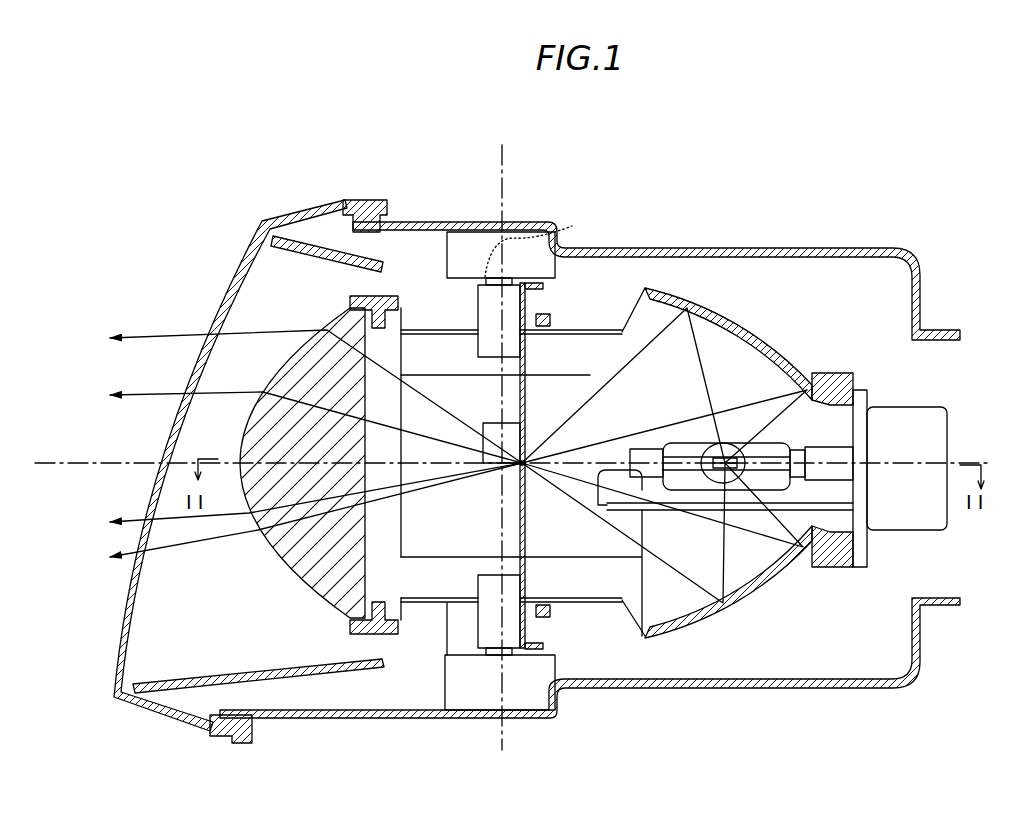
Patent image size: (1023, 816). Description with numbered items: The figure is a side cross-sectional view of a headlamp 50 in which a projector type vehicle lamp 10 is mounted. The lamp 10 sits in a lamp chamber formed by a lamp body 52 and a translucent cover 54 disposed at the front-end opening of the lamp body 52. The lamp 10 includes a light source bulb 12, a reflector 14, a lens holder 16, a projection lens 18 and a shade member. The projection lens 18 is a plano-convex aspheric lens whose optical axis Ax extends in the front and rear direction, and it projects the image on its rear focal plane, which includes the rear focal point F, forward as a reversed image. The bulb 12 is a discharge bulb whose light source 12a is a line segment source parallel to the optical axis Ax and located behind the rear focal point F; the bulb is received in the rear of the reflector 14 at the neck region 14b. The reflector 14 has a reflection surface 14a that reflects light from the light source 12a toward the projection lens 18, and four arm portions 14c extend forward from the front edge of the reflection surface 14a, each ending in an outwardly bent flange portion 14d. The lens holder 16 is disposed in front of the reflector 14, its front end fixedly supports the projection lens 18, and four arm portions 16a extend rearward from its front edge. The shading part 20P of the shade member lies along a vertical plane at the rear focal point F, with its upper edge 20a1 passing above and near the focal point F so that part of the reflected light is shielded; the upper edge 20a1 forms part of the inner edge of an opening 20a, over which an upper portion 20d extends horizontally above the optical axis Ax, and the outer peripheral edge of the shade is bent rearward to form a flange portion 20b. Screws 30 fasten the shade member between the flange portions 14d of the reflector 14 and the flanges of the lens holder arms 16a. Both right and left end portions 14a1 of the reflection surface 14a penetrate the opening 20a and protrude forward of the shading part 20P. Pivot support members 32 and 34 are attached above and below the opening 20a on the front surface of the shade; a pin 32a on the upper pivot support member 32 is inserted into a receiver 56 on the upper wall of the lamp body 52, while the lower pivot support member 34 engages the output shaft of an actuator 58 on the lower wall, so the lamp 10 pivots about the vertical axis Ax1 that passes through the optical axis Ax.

The headlamp 50 is at (200, 184).
The vehicle lamp 10 is at (298, 279).
The lamp body 52 is at (797, 247).
The translucent cover 54 is at (215, 305).
The receiver 56 is at (483, 250).
The actuator 58 is at (485, 690).
The light source bulb 12 is at (698, 438).
The light source 12a is at (726, 472).
The reflector 14 is at (763, 318).
The reflection surface 14a is at (765, 337).
The end portions of the reflection surface 14a1 is at (493, 416).
The bulb insertion hole portion 14b is at (826, 403).
The arm portion 14c is at (612, 602).
The flange portion 14d is at (557, 626).
The lens holder 16 is at (342, 634).
The arm portion 16a is at (447, 606).
The projection lens 18 is at (238, 423).
The shading part 20P is at (529, 507).
The opening 20a is at (540, 393).
The upper edge 20a1 is at (527, 459).
The flange portion 20b is at (544, 289).
The upper portion 20d is at (532, 367).
The screws 30 is at (553, 612).
The pivot support member 32 is at (488, 312).
The pin 32a is at (551, 239).
The pivot support member 34 is at (485, 589).
The rear focal point F is at (526, 466).
The optical axis Ax is at (97, 467).
The vertical axis Ax1 is at (503, 205).